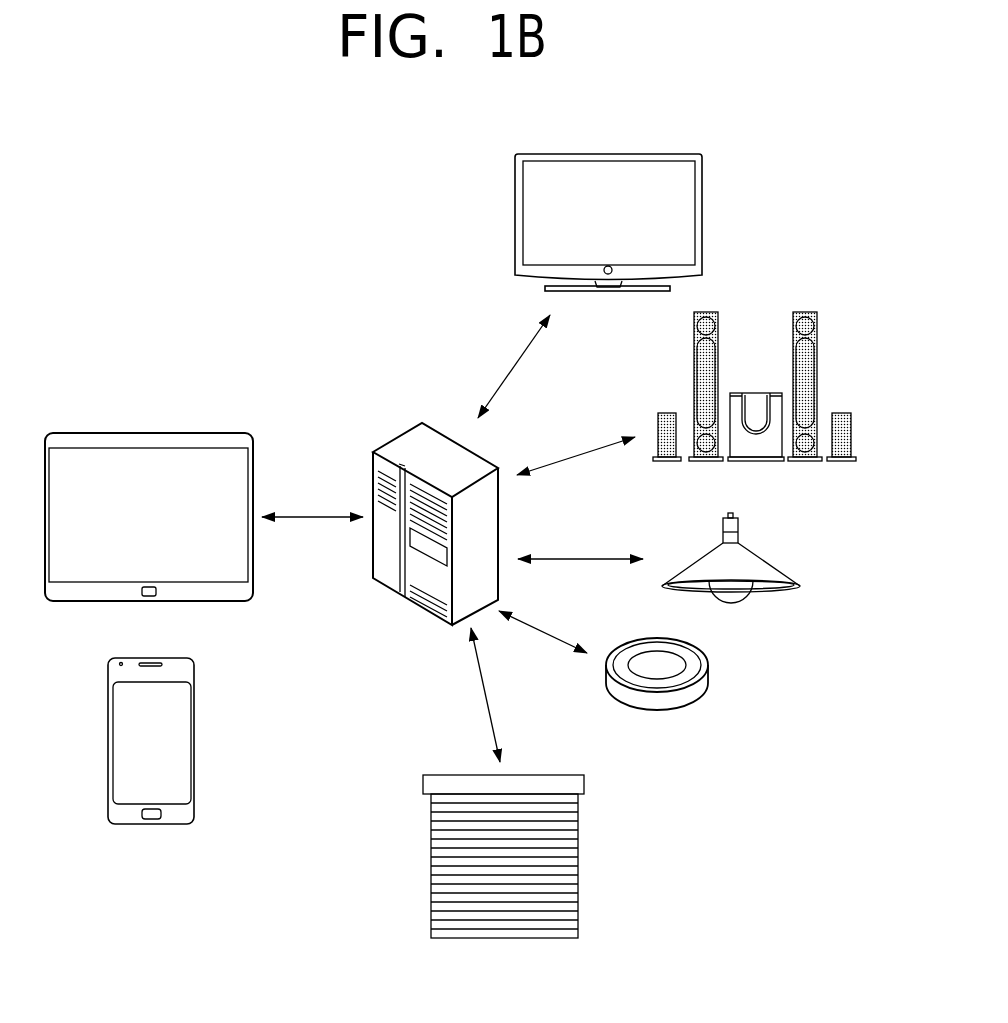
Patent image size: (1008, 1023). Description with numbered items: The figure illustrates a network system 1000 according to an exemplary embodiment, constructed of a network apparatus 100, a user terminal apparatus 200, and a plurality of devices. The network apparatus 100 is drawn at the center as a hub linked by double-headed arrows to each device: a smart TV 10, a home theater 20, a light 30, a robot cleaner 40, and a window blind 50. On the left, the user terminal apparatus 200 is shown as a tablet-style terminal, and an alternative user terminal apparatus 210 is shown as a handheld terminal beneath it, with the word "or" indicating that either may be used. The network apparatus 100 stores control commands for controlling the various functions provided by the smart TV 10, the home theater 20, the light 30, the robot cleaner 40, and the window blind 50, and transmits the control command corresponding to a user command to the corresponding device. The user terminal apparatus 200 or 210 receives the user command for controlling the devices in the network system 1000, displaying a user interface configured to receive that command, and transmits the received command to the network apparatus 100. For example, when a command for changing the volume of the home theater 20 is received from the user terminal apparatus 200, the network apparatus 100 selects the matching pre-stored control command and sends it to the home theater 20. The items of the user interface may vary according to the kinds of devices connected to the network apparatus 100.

The network system 1000 is at (292, 122).
The smart TV 10 is at (702, 187).
The home theater 20 is at (808, 312).
The light 30 is at (770, 565).
The robot cleaner 40 is at (708, 677).
The window blind 50 is at (584, 783).
The network apparatus 100 is at (405, 440).
The user terminal apparatus 200 is at (205, 433).
The user terminal apparatus 210 is at (194, 662).